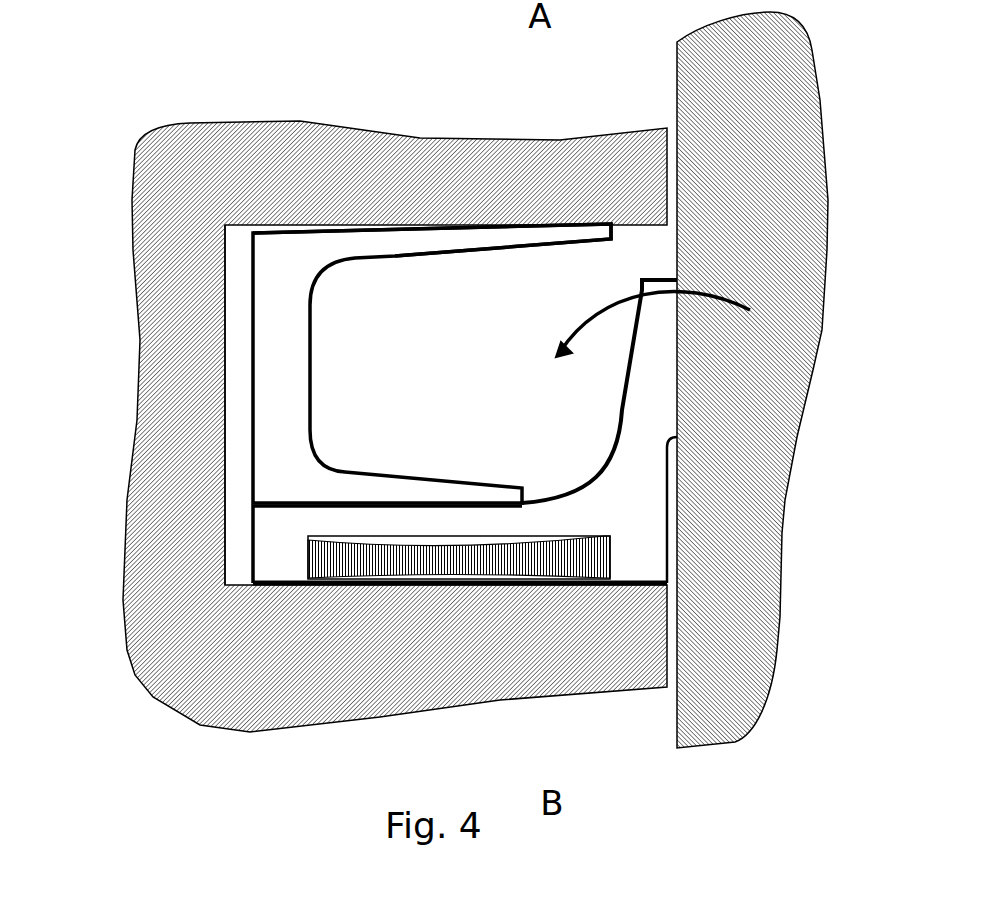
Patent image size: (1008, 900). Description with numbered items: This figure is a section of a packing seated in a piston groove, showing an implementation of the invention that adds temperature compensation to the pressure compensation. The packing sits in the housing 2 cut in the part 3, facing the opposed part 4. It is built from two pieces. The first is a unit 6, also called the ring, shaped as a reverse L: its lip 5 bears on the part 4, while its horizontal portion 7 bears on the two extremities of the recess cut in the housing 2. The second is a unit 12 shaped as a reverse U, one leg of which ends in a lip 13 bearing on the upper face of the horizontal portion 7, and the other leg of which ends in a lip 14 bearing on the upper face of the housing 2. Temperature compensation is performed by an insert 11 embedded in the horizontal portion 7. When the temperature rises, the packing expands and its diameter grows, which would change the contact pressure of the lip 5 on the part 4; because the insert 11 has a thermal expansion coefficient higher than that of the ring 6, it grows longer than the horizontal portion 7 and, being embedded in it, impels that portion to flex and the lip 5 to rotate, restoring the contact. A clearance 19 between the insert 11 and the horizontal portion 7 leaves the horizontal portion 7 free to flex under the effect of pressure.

The housing 2 is at (238, 252).
The part 3 is at (555, 140).
The part 4 is at (828, 260).
The lip 5 is at (668, 338).
The unit 6 is at (668, 513).
The horizontal portion 7 is at (300, 588).
The insert 11 is at (450, 577).
The unit 12 is at (250, 430).
The lip 13 is at (430, 492).
The lip 14 is at (525, 235).
The clearance 19 is at (470, 542).